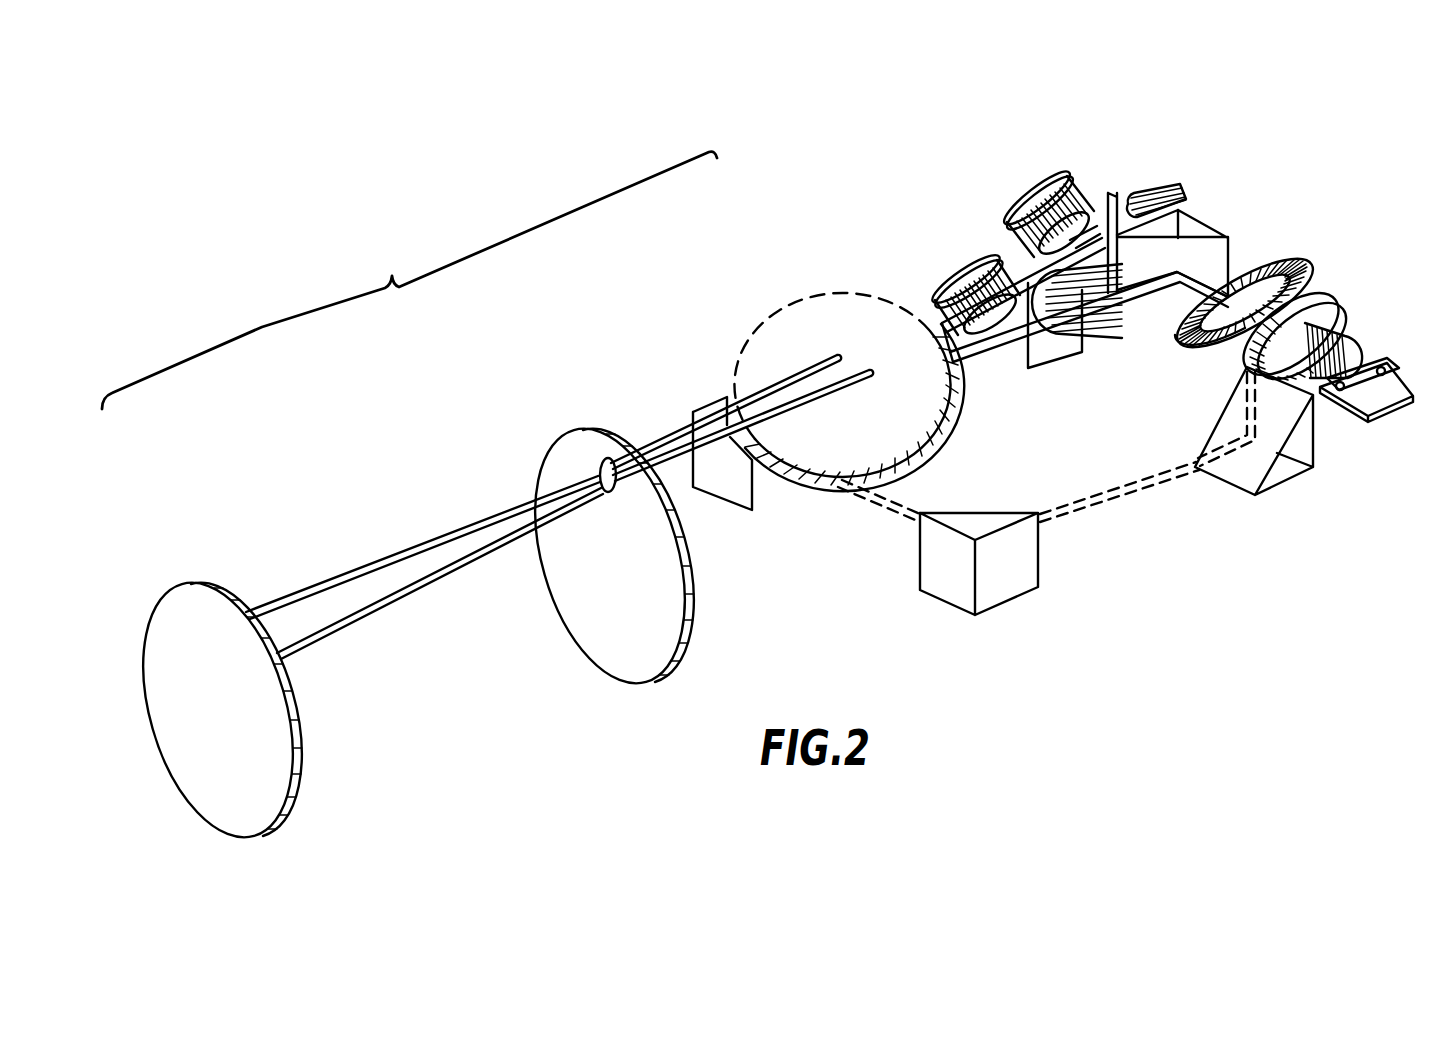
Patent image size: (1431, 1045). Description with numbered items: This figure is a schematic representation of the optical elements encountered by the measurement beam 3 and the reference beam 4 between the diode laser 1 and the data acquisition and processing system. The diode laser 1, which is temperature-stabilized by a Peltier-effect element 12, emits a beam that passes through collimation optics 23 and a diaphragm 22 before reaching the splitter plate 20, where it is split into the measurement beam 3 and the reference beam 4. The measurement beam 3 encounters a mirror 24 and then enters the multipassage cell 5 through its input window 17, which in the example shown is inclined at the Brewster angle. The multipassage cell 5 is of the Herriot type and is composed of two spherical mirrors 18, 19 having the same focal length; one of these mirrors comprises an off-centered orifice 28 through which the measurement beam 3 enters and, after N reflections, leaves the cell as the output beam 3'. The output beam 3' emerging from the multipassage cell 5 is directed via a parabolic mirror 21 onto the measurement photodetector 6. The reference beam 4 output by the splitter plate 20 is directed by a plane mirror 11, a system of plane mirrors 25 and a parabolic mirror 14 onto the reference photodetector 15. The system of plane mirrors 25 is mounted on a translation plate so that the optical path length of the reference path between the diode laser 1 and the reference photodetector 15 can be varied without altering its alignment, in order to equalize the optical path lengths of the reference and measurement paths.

The diode laser 1 is at (1366, 368).
The measurement beam 3 is at (1089, 342).
The output beam 3' is at (858, 338).
The reference beam 4 is at (970, 363).
The multipassage cell 5 is at (409, 280).
The measurement photodetector 6 is at (1017, 217).
The plane mirror 11 is at (1243, 503).
The Peltier-effect element 12 is at (1400, 417).
The parabolic mirror 14 is at (1063, 367).
The reference photodetector 15 is at (955, 270).
The input window 17 is at (804, 306).
The spherical mirror 18 is at (588, 428).
The spherical mirror 19 is at (304, 805).
The splitter plate 20 is at (1250, 270).
The parabolic mirror 21 is at (1130, 192).
The diaphragm 22 is at (1313, 303).
The collimation optics 23 is at (1347, 337).
The mirror 24 is at (1200, 222).
The system of plane mirrors 25 is at (735, 507).
The off-centered orifice 28 is at (607, 490).